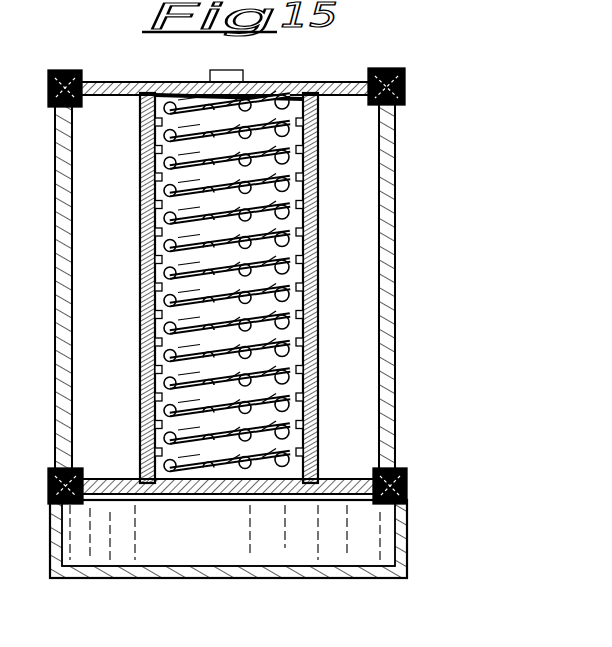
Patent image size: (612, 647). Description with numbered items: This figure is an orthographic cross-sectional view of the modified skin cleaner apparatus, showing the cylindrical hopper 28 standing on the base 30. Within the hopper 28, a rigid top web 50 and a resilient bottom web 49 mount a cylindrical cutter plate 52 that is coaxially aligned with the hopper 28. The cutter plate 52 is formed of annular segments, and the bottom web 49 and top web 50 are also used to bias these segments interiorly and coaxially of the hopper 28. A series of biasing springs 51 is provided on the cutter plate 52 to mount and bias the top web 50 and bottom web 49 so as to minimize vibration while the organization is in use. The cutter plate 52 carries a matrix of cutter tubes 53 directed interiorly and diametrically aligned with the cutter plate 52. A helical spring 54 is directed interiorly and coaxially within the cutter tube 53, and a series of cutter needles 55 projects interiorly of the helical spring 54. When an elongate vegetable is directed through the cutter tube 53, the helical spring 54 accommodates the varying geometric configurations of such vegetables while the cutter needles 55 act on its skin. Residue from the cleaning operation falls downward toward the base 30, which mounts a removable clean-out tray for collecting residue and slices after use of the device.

The cylindrical hopper 28 is at (394, 285).
The base 30 is at (411, 528).
The resilient bottom web 49 is at (112, 467).
The rigid top web 50 is at (103, 97).
The biasing springs 51 is at (405, 80).
The cylindrical cutter plate 52 is at (321, 368).
The cutter tubes 53 is at (320, 426).
The helical spring 54 is at (321, 304).
The cutter needles 55 is at (320, 276).